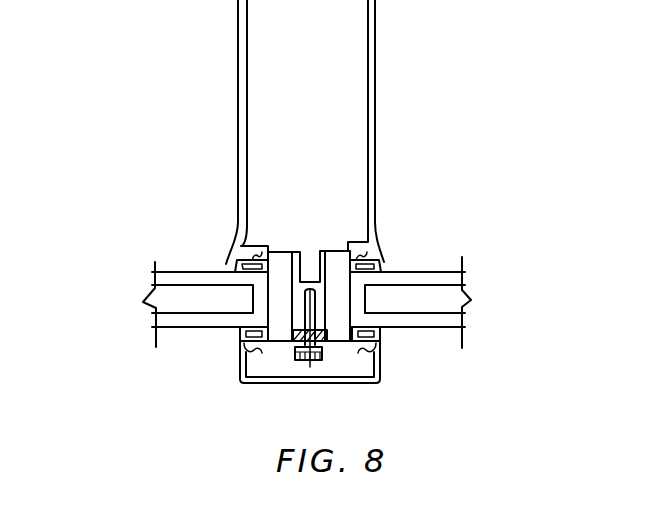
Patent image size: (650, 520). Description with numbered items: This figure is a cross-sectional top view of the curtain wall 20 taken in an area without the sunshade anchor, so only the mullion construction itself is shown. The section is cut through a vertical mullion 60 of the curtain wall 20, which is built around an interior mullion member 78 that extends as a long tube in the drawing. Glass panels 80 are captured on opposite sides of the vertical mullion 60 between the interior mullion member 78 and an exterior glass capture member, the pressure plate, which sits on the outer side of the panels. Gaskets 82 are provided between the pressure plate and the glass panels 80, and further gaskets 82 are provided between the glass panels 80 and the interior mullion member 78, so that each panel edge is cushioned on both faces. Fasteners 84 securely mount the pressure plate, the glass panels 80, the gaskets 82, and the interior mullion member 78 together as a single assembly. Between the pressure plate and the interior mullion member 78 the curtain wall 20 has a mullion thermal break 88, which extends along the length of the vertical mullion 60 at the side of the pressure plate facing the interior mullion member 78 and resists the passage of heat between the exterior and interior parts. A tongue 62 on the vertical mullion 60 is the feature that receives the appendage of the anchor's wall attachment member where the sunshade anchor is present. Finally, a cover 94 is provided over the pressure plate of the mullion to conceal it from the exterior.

The curtain wall 20 is at (134, 122).
The vertical mullion 60 is at (160, 195).
The interior mullion member 78 is at (238, 40).
The tongue 62 is at (333, 305).
The glass panels 80 is at (176, 272).
The gaskets 82 is at (240, 258).
The fasteners 84 is at (304, 356).
The mullion thermal break 88 is at (325, 341).
The cover 94 is at (242, 372).